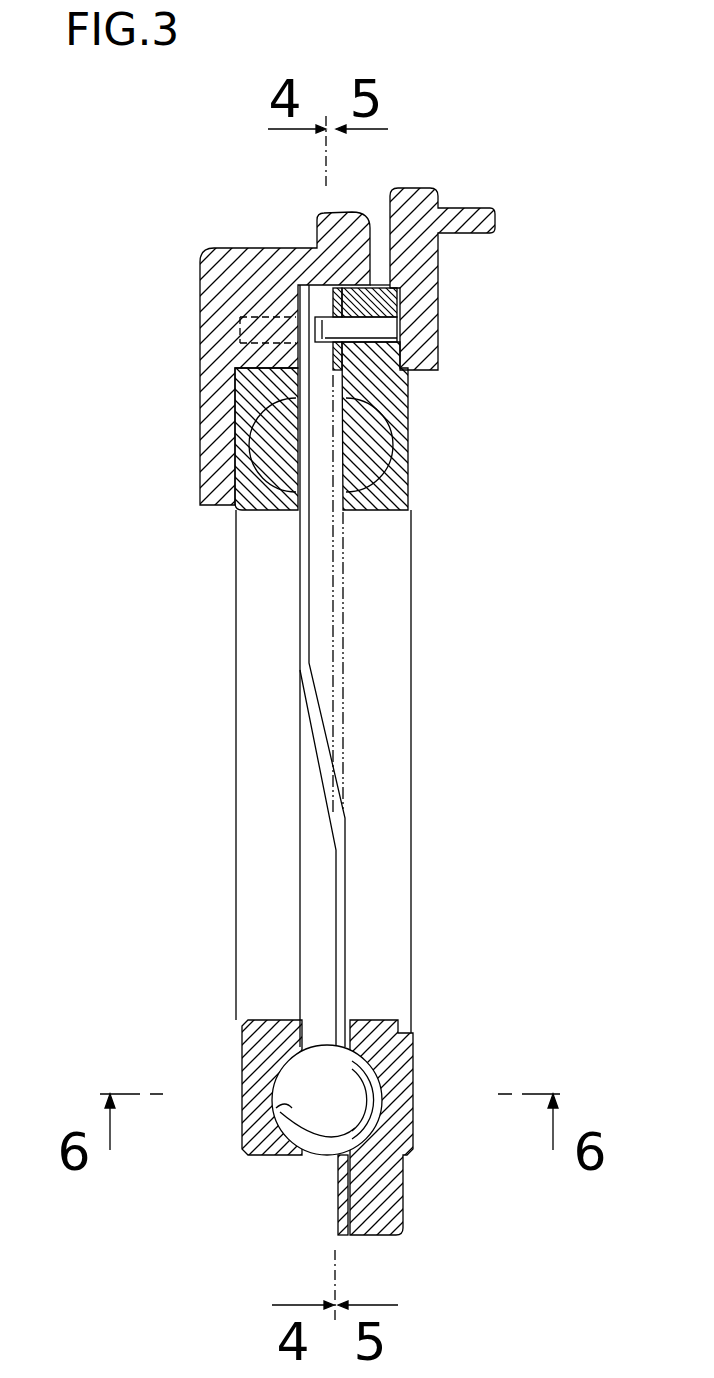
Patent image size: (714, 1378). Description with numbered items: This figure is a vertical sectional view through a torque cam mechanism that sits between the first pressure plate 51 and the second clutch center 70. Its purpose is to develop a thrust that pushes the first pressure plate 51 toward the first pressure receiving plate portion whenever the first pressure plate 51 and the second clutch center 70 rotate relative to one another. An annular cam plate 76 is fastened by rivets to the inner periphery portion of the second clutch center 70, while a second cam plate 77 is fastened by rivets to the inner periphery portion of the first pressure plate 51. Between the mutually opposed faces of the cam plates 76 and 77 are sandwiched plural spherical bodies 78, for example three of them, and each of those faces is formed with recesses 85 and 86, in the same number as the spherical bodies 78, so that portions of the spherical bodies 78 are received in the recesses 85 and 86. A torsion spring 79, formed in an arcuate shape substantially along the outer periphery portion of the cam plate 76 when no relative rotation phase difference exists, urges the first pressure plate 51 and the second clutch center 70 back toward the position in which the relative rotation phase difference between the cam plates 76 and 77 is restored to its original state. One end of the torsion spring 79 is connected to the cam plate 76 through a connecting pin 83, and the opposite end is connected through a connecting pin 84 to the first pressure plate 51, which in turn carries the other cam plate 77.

The first pressure plate 51 is at (203, 353).
The second clutch center 70 is at (423, 337).
The annular cam plate 76 is at (390, 410).
The cam plate 77 is at (253, 443).
The spherical bodies 78 is at (360, 1077).
The torsion spring 79 is at (338, 942).
The connecting pin 83 is at (376, 328).
The connecting pin 84 is at (283, 317).
The recess 85 is at (390, 1167).
The recess 86 is at (290, 1123).